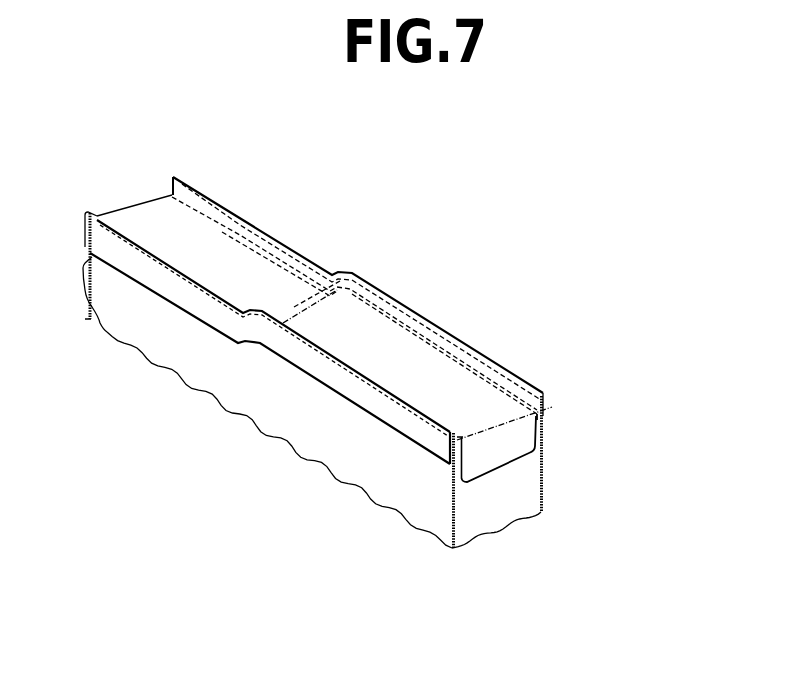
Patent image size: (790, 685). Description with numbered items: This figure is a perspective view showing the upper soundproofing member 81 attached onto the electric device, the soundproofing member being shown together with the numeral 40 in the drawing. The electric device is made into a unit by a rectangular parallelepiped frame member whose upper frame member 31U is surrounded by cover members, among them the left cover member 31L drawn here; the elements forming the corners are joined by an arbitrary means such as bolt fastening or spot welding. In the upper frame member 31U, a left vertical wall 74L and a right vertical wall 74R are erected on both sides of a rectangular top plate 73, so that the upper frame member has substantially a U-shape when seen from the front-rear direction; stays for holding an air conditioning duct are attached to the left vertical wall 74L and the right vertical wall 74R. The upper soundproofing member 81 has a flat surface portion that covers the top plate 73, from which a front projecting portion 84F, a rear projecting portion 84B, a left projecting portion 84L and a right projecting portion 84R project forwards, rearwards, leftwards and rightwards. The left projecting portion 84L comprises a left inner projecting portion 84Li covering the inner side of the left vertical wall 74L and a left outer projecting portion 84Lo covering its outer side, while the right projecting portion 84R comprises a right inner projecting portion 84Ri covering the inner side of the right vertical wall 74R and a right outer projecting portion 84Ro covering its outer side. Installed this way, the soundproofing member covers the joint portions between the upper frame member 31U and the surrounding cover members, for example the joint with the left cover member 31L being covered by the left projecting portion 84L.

The upper soundproofing member 81 is at (372, 388).
The fixing member 40 is at (122, 203).
The top plate 73 is at (228, 263).
The left vertical wall 74L is at (190, 292).
The right vertical wall 74R is at (467, 356).
The upper frame member 31U is at (391, 352).
The left cover member 31L is at (298, 413).
The front projecting portion 84F is at (107, 336).
The left projecting portion 84L is at (446, 527).
The left outer projecting portion 84Lo is at (455, 445).
The left inner projecting portion 84Li is at (465, 440).
The right projecting portion 84R is at (598, 450).
The right outer projecting portion 84Ro is at (547, 410).
The right inner projecting portion 84Ri is at (540, 414).
The rear projecting portion 84B is at (503, 450).